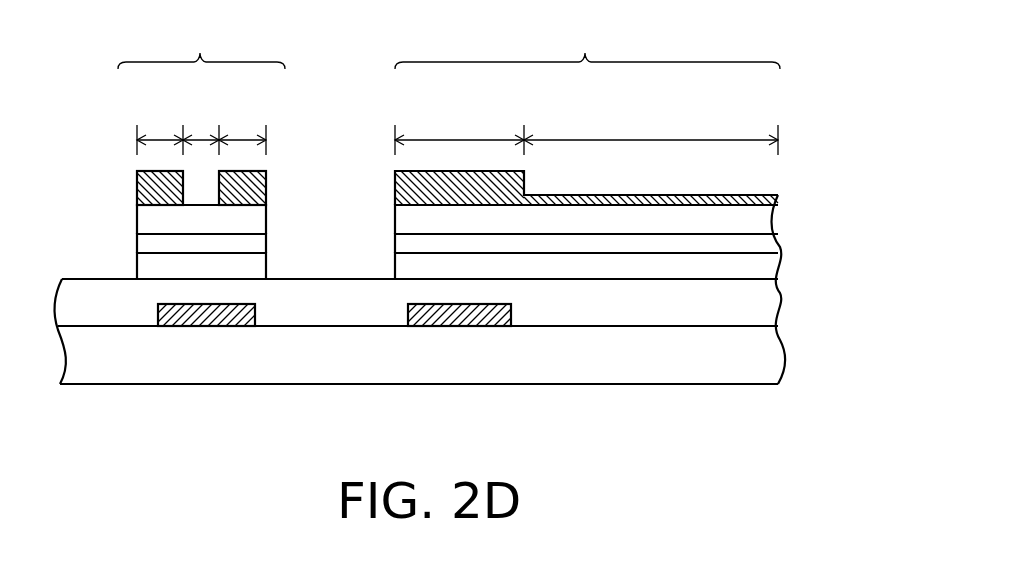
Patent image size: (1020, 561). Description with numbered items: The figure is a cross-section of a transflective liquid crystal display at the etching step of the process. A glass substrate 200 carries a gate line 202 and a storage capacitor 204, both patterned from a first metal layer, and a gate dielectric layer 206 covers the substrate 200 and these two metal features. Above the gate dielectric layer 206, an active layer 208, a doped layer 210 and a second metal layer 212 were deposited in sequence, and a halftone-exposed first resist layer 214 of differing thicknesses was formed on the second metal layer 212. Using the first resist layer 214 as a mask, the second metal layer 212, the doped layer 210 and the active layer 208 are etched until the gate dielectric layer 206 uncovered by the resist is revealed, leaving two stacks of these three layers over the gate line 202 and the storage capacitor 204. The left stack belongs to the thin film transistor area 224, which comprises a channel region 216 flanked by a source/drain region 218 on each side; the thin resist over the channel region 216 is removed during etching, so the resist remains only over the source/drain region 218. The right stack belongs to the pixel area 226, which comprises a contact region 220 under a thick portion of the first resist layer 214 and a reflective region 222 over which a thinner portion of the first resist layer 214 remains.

The substrate 200 is at (753, 357).
The gate line 202 is at (208, 312).
The storage capacitor 204 is at (463, 314).
The gate dielectric layer 206 is at (753, 300).
The active layer 208 is at (150, 267).
The doped layer 210 is at (150, 243).
The second metal layer 212 is at (150, 218).
The first resist layer 214 is at (152, 187).
The channel region 216 is at (203, 137).
The source/drain region 218 is at (157, 136).
The contact region 220 is at (460, 137).
The reflective region 222 is at (628, 137).
The thin film transistor area 224 is at (201, 45).
The pixel area 226 is at (587, 45).